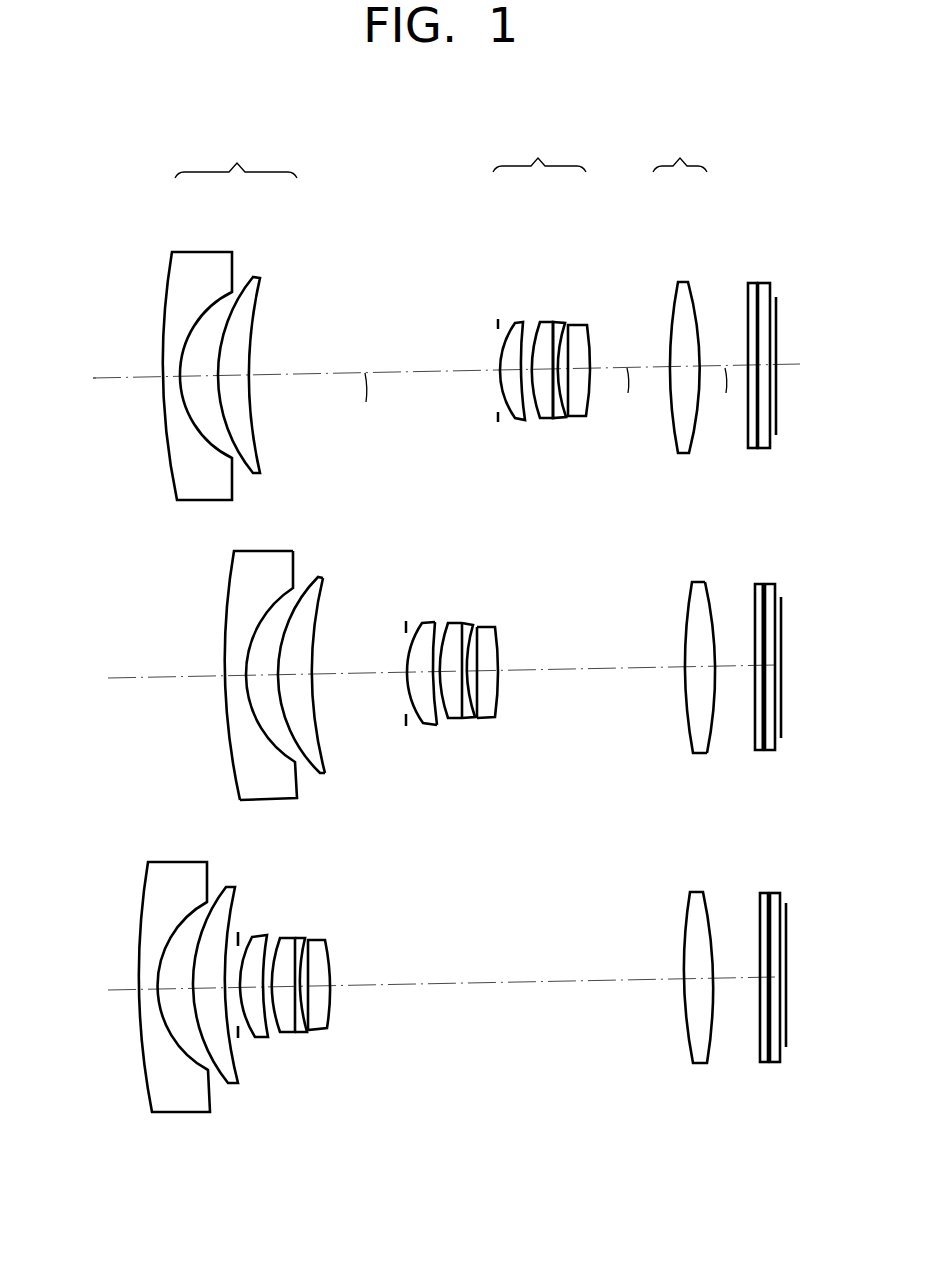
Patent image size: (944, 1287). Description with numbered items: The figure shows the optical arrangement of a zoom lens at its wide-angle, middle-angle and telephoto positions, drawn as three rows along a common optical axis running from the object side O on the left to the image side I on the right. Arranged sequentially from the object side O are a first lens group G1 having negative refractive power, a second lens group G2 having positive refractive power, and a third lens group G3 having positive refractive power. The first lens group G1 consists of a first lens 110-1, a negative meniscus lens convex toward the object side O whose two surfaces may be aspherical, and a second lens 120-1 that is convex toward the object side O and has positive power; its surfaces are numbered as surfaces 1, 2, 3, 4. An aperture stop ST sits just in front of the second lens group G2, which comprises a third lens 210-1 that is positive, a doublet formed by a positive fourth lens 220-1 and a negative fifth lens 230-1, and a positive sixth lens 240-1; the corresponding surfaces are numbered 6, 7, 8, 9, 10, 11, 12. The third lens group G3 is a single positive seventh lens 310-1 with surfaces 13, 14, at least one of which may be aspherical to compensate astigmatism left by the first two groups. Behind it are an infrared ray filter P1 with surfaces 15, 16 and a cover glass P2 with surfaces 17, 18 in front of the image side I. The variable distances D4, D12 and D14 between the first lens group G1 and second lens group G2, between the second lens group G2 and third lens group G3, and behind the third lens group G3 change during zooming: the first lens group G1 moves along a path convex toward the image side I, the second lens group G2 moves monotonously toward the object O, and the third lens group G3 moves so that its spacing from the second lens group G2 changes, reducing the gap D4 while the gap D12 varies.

The first lens 110-1 is at (193, 256).
The second lens 120-1 is at (259, 274).
The third lens 210-1 is at (512, 320).
The fourth lens 220-1 is at (542, 320).
The fifth lens 230-1 is at (563, 323).
The sixth lens 240-1 is at (582, 325).
The seventh lens 310-1 is at (680, 280).
The infrared ray filter P1 is at (752, 283).
The cover glass P2 is at (763, 283).
The aperture stop ST is at (496, 325).
The first lens group G1 is at (236, 154).
The second lens group G2 is at (539, 149).
The third lens group G3 is at (680, 147).
The object side O is at (78, 378).
The image side I is at (788, 366).
The variable distance D4 is at (367, 404).
The variable distance D12 is at (628, 399).
The variable distance D14 is at (727, 399).
The surface 1 is at (227, 605).
The surface 2 is at (248, 645).
The surface 3 is at (303, 588).
The surface 4 is at (317, 628).
The surface 6 is at (418, 625).
The surface 7 is at (438, 632).
The surface 8 is at (443, 710).
The surface 9 is at (463, 713).
The surface 10 is at (480, 625).
The surface 11 is at (478, 660).
The surface 12 is at (498, 693).
The surface 13 is at (690, 600).
The surface 14 is at (708, 598).
The surface 15 is at (755, 597).
The surface 16 is at (765, 607).
The surface 17 is at (760, 730).
The surface 18 is at (780, 740).